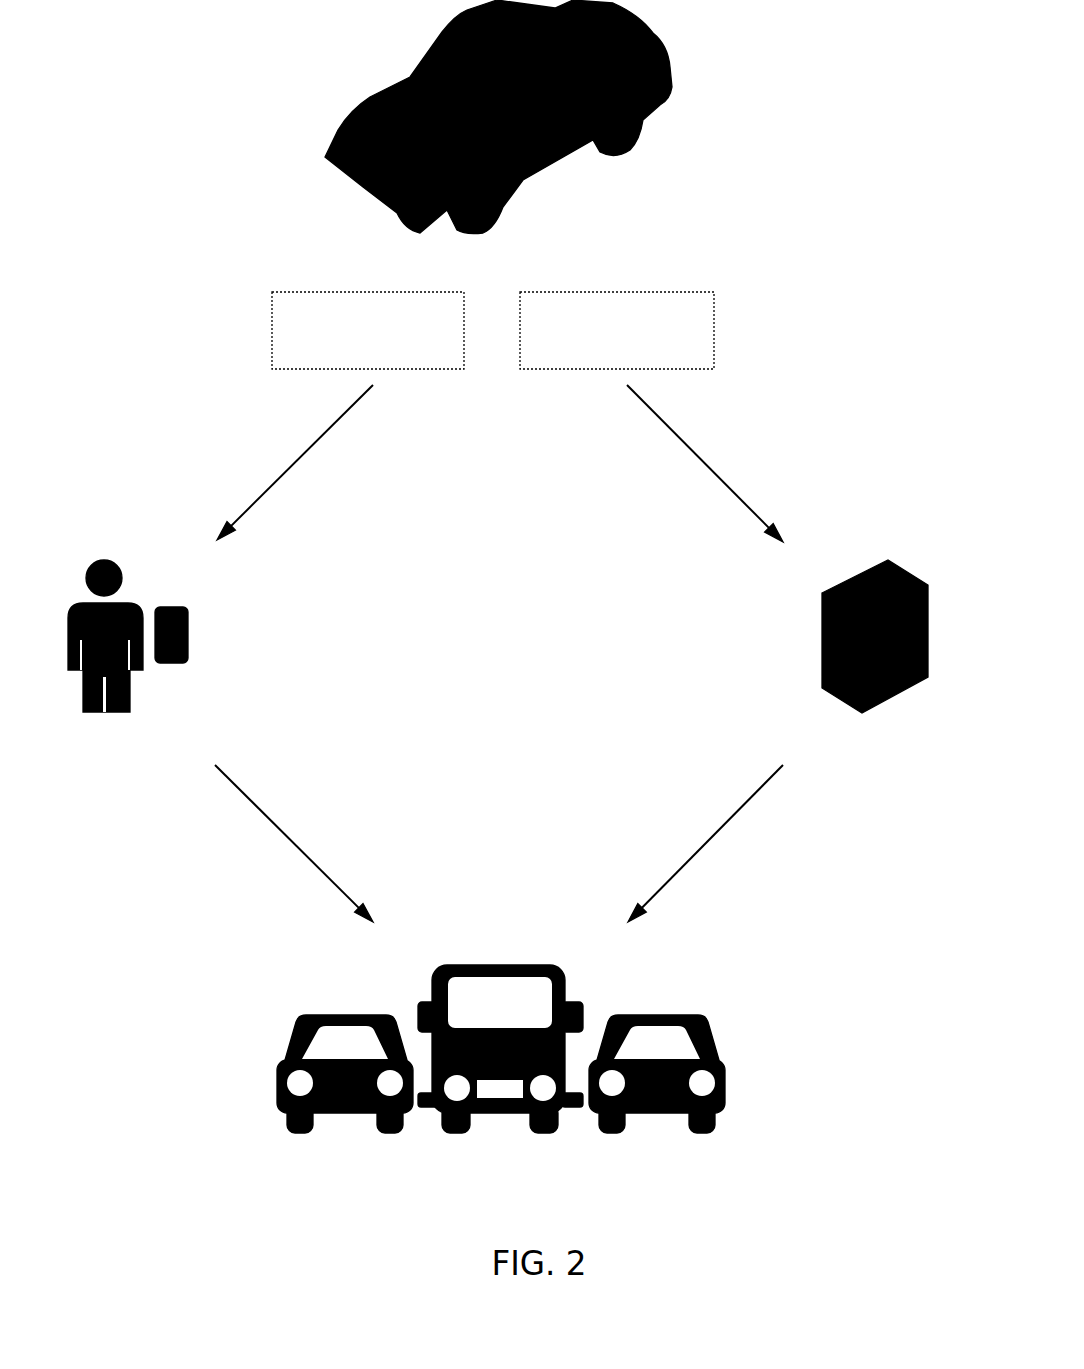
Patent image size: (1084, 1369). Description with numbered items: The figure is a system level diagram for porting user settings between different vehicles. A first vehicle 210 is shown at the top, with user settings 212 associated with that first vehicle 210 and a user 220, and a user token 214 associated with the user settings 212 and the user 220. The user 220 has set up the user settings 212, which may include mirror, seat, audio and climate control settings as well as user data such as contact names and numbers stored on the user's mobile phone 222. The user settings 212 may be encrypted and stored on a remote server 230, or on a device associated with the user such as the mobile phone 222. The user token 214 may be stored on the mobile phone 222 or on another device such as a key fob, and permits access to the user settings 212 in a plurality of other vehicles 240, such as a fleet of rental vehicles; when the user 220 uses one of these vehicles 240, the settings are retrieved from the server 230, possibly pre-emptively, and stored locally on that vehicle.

The first vehicle 210 is at (498, 117).
The user settings 212 is at (617, 330).
The user token 214 is at (368, 330).
The user 220 is at (93, 636).
The mobile phone 222 is at (192, 635).
The remote server 230 is at (891, 630).
The plurality of other vehicles 240 is at (652, 1200).